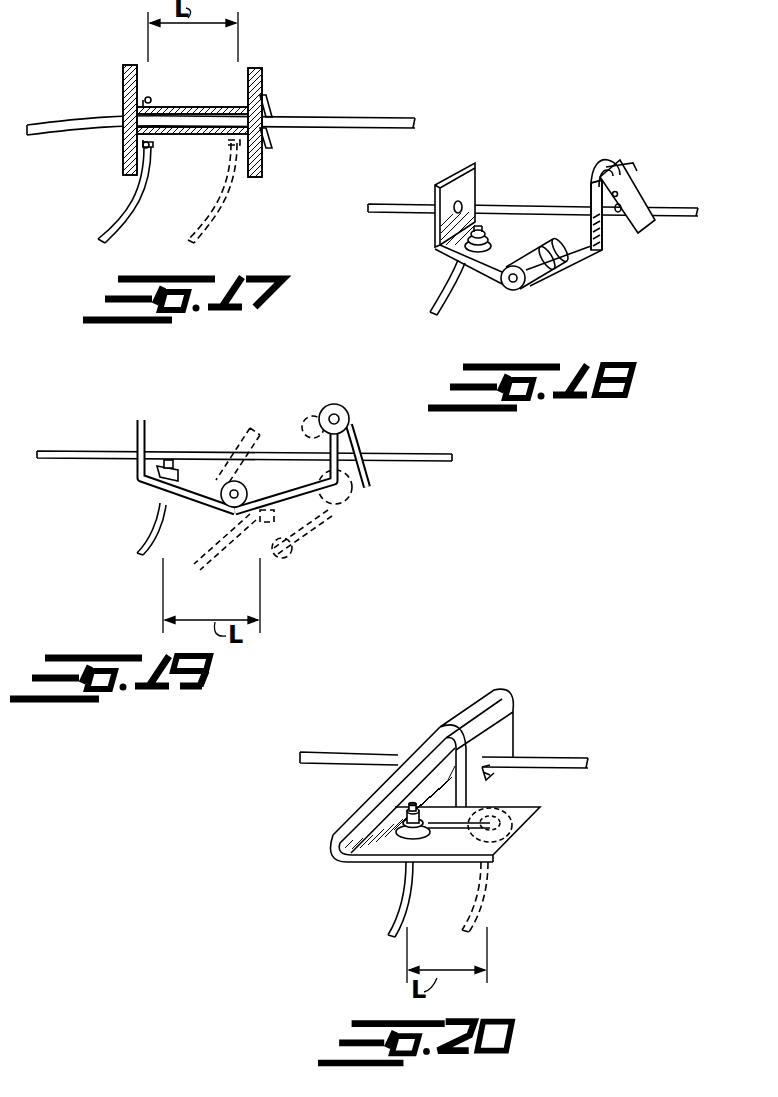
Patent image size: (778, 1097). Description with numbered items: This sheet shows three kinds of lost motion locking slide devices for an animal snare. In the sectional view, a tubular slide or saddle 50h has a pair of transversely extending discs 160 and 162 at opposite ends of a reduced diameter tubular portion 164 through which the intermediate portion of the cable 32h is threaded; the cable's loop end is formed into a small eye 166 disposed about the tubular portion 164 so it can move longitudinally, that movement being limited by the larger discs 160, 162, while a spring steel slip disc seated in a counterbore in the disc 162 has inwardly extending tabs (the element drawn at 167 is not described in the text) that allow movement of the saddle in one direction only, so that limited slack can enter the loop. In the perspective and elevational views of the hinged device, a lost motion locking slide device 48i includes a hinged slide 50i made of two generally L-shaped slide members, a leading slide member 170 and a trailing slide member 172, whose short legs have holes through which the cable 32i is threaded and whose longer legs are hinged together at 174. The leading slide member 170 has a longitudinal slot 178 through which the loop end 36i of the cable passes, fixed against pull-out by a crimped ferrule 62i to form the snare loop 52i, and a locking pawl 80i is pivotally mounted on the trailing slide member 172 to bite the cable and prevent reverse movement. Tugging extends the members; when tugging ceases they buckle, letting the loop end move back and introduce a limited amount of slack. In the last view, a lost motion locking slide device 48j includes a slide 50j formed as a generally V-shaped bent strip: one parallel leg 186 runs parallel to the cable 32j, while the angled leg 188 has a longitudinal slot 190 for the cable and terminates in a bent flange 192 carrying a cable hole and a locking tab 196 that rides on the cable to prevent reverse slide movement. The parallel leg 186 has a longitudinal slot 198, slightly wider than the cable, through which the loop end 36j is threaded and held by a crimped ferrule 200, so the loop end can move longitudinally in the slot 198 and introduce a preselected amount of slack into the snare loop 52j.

In FIG. 17, the cable 32h is at (338, 118).
In FIG. 17, the slide or saddle 50h is at (211, 138).
In FIG. 17, the disc 160 is at (122, 78).
In FIG. 17, the disc 162 is at (263, 75).
In FIG. 17, the reduced diameter tubular portion 164 is at (187, 134).
In FIG. 17, the loop or eye; slip disc 166 is at (149, 98).
In FIG. 17, the rivet clip 167 is at (263, 103).
In FIG. 18, the cable 32i is at (663, 205).
In FIG. 19, the cable 32i is at (53, 450).
In FIG. 18, the lost motion locking slide device 48i is at (478, 160).
In FIG. 18, the hinged slide 50i is at (513, 222).
In FIG. 19, the hinged slide 50i is at (241, 480).
In FIG. 18, the leading slide member 170 is at (464, 196).
In FIG. 19, the leading slide member 170 is at (137, 483).
In FIG. 18, the trailing slide member 172 is at (583, 257).
In FIG. 19, the trailing slide member 172 is at (330, 500).
In FIG. 18, the hinge 174 is at (512, 286).
In FIG. 19, the hinge 174 is at (244, 486).
In FIG. 18, the hole or longitudinal slot 178 is at (508, 254).
In FIG. 18, the crimped ferrule 62i is at (482, 252).
In FIG. 19, the crimped ferrule 62i is at (168, 465).
In FIG. 18, the loop end 36i is at (480, 232).
In FIG. 19, the loop end 36i is at (174, 462).
In FIG. 18, the locking pawl 80i is at (608, 152).
In FIG. 19, the locking pawl 80i is at (331, 398).
In FIG. 18, the snare loop 52i is at (430, 299).
In FIG. 19, the snare loop 52i is at (131, 541).
In FIG. 20, the cable 32j is at (556, 755).
In FIG. 20, the lost motion locking slide device 48j is at (443, 753).
In FIG. 20, the slide 50j is at (399, 768).
In FIG. 20, the angled leg 188 is at (352, 808).
In FIG. 20, the longitudinal slot 190 is at (405, 783).
In FIG. 20, the bent flange 192 is at (512, 718).
In FIG. 20, the locking detent or tab 196 is at (492, 770).
In FIG. 20, the longitudinal slot 198 is at (499, 840).
In FIG. 20, the crimped ferrule 200 is at (398, 836).
In FIG. 20, the loop end 36j is at (420, 808).
In FIG. 20, the parallel leg 186 is at (416, 874).
In FIG. 20, the snare loop 52j is at (390, 914).